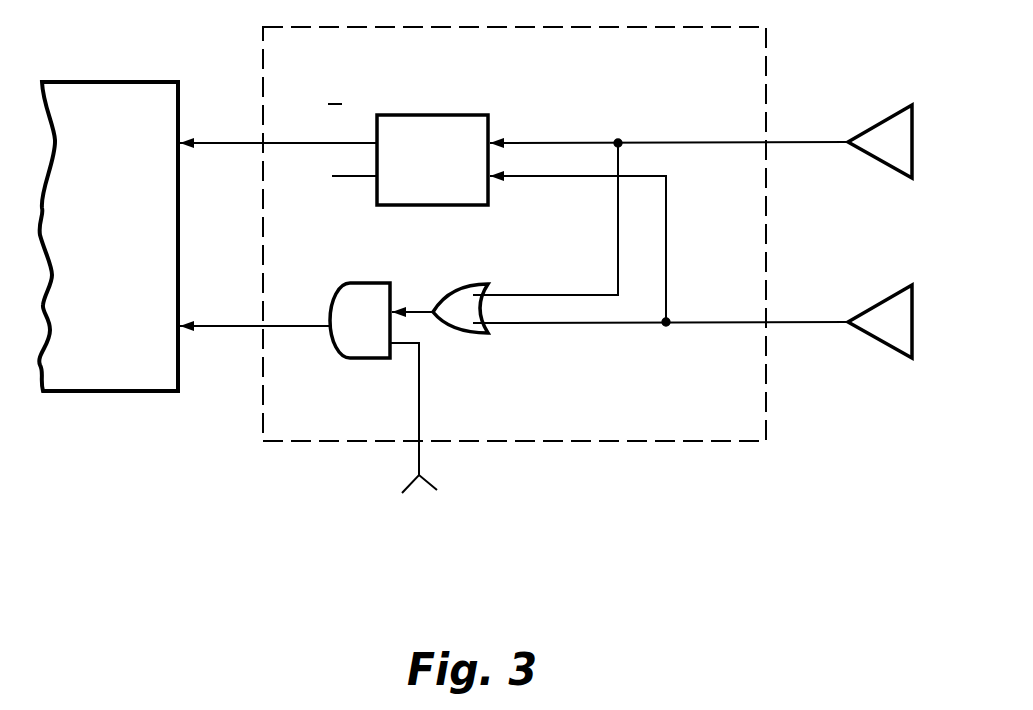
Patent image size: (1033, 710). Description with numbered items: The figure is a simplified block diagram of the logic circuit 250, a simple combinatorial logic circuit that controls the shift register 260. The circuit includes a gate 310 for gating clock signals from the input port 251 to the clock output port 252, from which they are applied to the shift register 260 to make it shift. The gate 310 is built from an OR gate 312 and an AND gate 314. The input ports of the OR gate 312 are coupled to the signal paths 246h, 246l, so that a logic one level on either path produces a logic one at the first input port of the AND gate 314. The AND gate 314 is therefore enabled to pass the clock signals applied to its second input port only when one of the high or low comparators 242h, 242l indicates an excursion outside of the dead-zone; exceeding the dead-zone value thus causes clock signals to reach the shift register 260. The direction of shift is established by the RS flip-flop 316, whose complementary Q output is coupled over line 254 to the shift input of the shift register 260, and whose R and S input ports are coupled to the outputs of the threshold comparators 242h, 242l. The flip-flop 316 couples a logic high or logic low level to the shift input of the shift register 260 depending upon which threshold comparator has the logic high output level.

The logic circuit 250 is at (720, 428).
The shift register 260 is at (118, 82).
The shift signal line 254 is at (231, 142).
The clock output port 252 is at (240, 328).
The RS flip-flop 316 is at (438, 114).
The gate 310 is at (470, 263).
The OR gate 312 is at (462, 334).
The AND gate 314 is at (368, 360).
The input port 251 is at (418, 448).
The high comparator 242h is at (880, 118).
The signal path 246h is at (822, 144).
The low comparator 242l is at (878, 340).
The signal path 246l is at (804, 322).